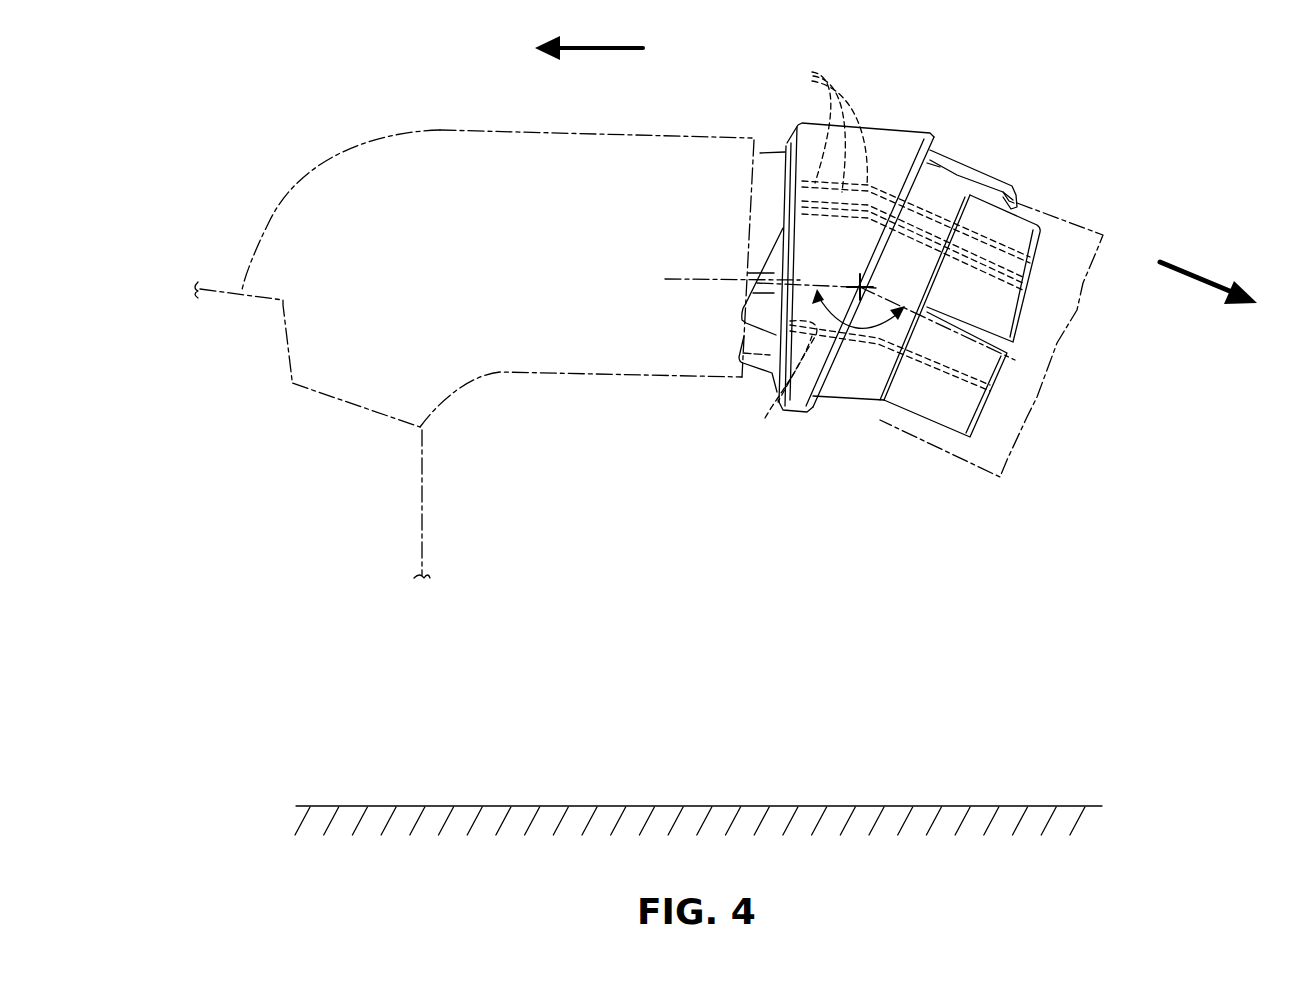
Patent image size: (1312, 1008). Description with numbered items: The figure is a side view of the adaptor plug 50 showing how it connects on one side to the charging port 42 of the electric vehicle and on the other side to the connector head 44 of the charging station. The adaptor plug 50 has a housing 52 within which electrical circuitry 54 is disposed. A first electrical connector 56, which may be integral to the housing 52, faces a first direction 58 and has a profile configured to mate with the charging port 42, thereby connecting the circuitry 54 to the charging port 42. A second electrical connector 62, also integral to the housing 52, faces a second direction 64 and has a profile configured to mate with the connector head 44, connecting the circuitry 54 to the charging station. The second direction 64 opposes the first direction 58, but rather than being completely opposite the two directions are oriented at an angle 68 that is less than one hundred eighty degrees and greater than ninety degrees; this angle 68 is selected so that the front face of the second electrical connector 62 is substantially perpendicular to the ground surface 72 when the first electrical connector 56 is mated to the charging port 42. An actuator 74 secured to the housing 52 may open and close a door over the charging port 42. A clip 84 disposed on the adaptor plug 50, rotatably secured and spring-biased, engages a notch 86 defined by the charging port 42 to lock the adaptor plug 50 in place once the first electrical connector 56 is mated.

The charging port 42 is at (942, 450).
The connector head 44 is at (380, 147).
The adaptor plug 50 is at (874, 96).
The housing 52 is at (914, 127).
The electrical circuitry 54 is at (810, 255).
The first electrical connector 56 is at (993, 313).
The first direction 58 is at (1197, 273).
The second electrical connector 62 is at (786, 143).
The second direction 64 is at (573, 44).
The angle 68 is at (858, 332).
The ground surface 72 is at (727, 805).
The actuator 74 is at (756, 372).
The clip 84 is at (965, 161).
The notch 86 is at (1018, 193).